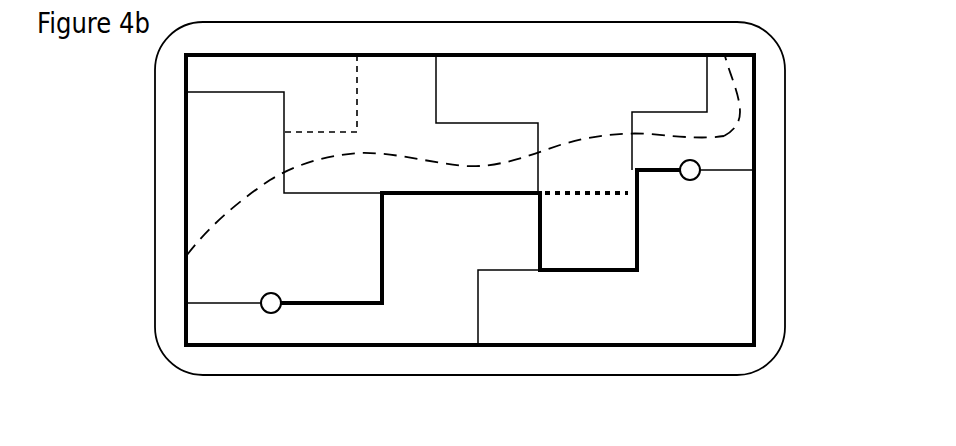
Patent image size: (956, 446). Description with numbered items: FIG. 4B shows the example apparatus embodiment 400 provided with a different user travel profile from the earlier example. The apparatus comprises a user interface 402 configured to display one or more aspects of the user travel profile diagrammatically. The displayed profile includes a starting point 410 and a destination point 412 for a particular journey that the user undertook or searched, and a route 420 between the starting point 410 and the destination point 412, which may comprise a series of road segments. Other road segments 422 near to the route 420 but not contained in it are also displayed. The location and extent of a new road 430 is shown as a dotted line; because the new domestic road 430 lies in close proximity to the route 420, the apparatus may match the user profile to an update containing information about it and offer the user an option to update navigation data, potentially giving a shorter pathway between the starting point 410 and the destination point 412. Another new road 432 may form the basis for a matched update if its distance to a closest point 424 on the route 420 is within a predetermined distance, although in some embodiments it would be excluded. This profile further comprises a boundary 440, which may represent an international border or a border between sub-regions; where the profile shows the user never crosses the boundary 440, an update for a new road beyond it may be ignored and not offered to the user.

The apparatus embodiment 400 is at (122, 136).
The user interface 402 is at (210, 270).
The starting point 410 is at (267, 311).
The destination point 412 is at (696, 178).
The route 420 is at (640, 255).
The other road segments 422 is at (280, 152).
The closest point 424 is at (380, 195).
The new road 430 is at (600, 198).
The another new road 432 is at (357, 78).
The boundary 440 is at (740, 118).